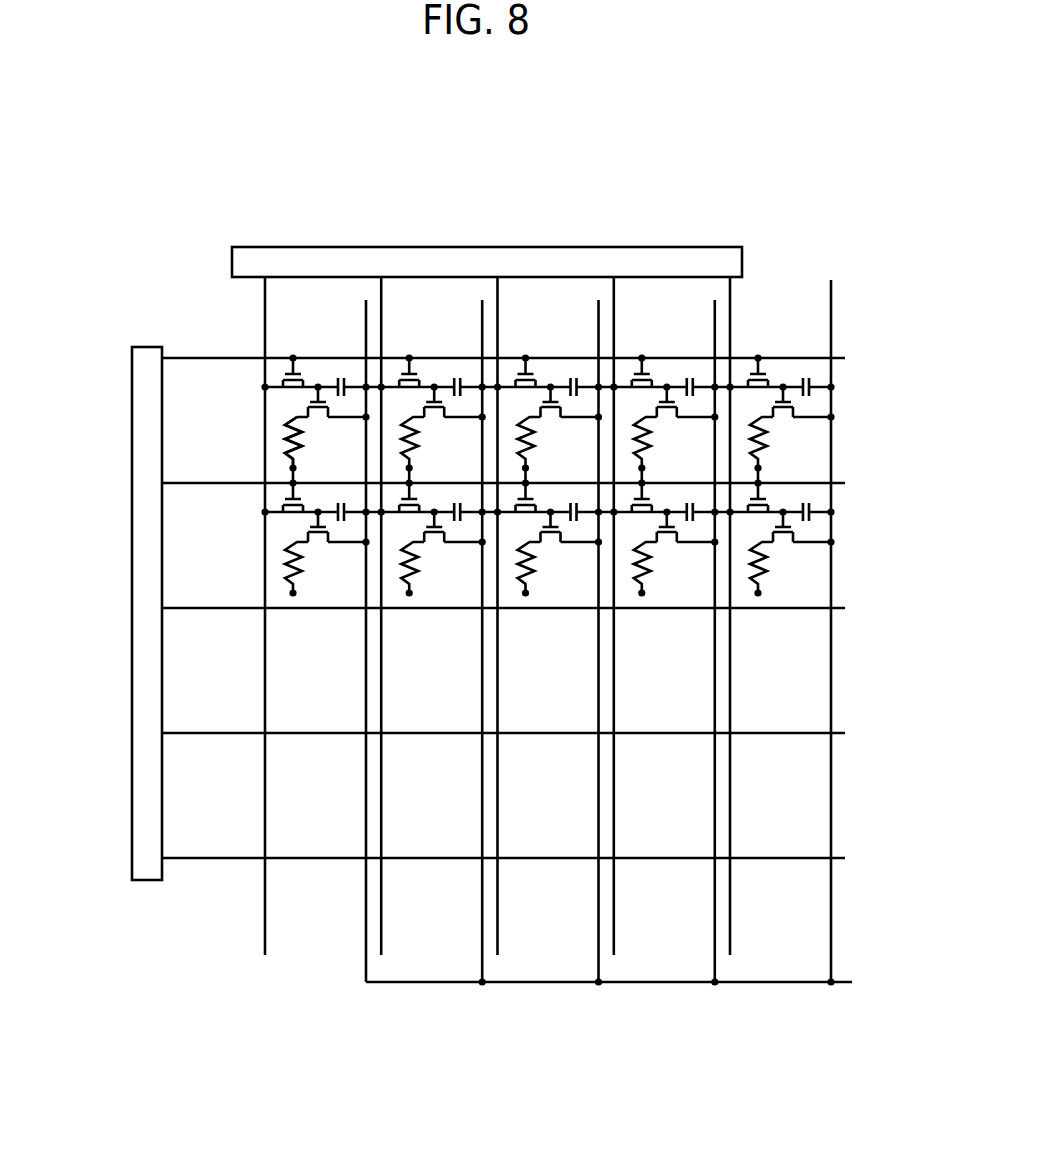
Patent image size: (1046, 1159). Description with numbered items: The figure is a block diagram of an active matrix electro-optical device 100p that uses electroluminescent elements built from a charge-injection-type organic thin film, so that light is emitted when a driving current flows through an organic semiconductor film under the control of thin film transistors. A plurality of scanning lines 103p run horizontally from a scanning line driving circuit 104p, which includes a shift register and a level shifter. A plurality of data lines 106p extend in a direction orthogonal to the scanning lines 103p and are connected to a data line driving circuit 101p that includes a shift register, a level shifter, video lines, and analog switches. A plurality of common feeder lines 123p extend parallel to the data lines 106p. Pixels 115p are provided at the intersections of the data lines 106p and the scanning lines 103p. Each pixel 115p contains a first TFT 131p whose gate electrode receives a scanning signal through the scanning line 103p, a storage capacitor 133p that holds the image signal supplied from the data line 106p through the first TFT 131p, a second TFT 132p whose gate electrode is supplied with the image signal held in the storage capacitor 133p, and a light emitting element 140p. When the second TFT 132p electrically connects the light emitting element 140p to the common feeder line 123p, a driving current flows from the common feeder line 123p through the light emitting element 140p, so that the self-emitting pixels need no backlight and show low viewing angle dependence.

The active matrix electro-optical device 100p is at (789, 121).
The data line driving circuit 101p is at (232, 266).
The scanning line 103p is at (222, 357).
The scanning line driving circuit 104p is at (132, 447).
The data line 106p is at (265, 302).
The common feeder line 123p is at (366, 302).
The first TFT 131p is at (291, 391).
The second TFT 132p is at (317, 424).
The storage capacitor 133p is at (348, 370).
The pixel 115p is at (283, 421).
The light emitting element 140p is at (283, 447).